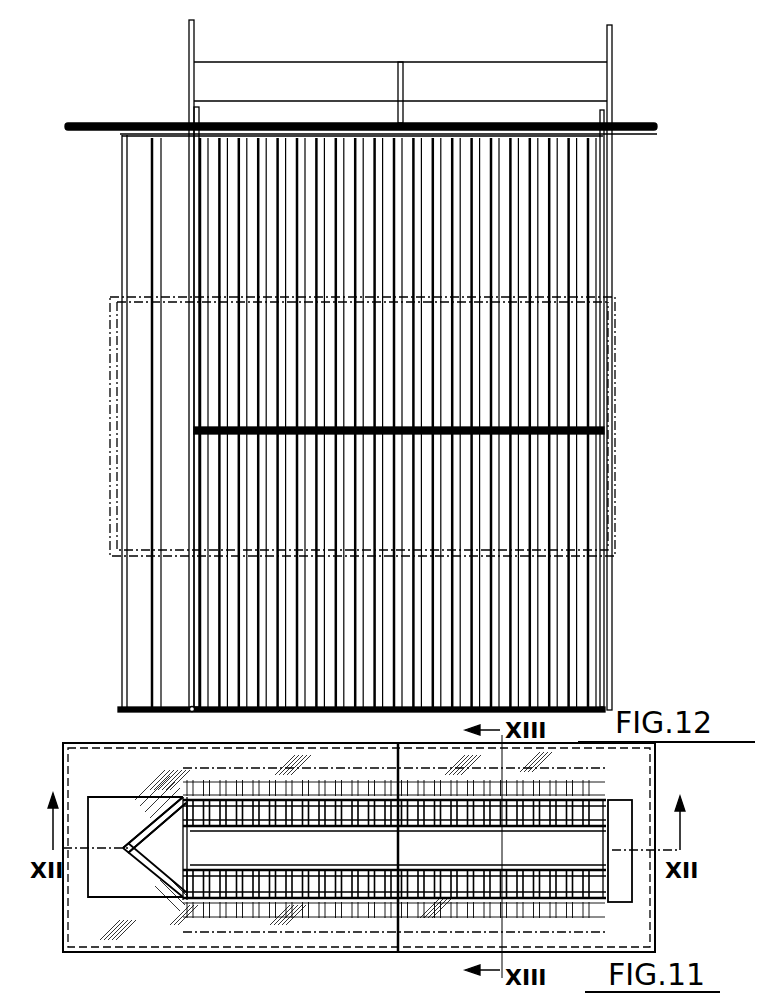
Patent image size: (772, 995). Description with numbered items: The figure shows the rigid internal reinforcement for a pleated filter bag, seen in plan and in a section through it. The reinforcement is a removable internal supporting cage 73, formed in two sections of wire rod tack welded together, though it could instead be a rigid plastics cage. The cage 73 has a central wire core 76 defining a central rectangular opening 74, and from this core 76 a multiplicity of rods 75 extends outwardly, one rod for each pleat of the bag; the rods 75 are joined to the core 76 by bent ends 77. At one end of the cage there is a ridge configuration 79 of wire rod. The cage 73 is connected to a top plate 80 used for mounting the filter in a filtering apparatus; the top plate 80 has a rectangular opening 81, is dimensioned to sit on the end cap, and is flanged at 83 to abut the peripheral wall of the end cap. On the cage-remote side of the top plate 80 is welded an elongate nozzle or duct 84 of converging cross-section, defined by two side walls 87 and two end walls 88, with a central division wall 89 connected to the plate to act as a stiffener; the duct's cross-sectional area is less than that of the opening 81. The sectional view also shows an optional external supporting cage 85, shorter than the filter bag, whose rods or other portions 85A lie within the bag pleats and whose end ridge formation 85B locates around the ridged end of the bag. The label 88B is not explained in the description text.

In FIG. 12, the internal supporting cage 73 is at (633, 588).
In FIG. 11, the central opening 74 is at (495, 869).
In FIG. 12, the rods 75 is at (585, 240).
In FIG. 11, the rods 75 is at (366, 782).
In FIG. 12, the central wire core 76 is at (185, 266).
In FIG. 11, the central wire core 76 is at (578, 828).
In FIG. 12, the bent ends 77 is at (240, 712).
In FIG. 11, the bent ends 77 is at (283, 890).
In FIG. 12, the ridge configuration 79 is at (125, 235).
In FIG. 11, the ridge configuration 79 is at (153, 798).
In FIG. 12, the top plate 80 is at (630, 125).
In FIG. 11, the top plate 80 is at (632, 784).
In FIG. 11, the rectangular opening 81 is at (150, 862).
In FIG. 12, the flange 83 is at (656, 133).
In FIG. 11, the flange 83 is at (655, 928).
In FIG. 12, the elongate nozzle or duct 84 is at (462, 62).
In FIG. 12, the external supporting cage 85 is at (112, 387).
In FIG. 12, the rods or other portions 85A is at (215, 510).
In FIG. 12, the end ridge formation 85B is at (140, 305).
In FIG. 12, the side walls 87 is at (300, 85).
In FIG. 12, the end walls 88 is at (188, 56).
In FIG. 11, the end walls 88 is at (154, 847).
In FIG. 11, the post plate 88B is at (122, 820).
In FIG. 12, the central division wall 89 is at (405, 68).
In FIG. 11, the central division wall 89 is at (400, 760).